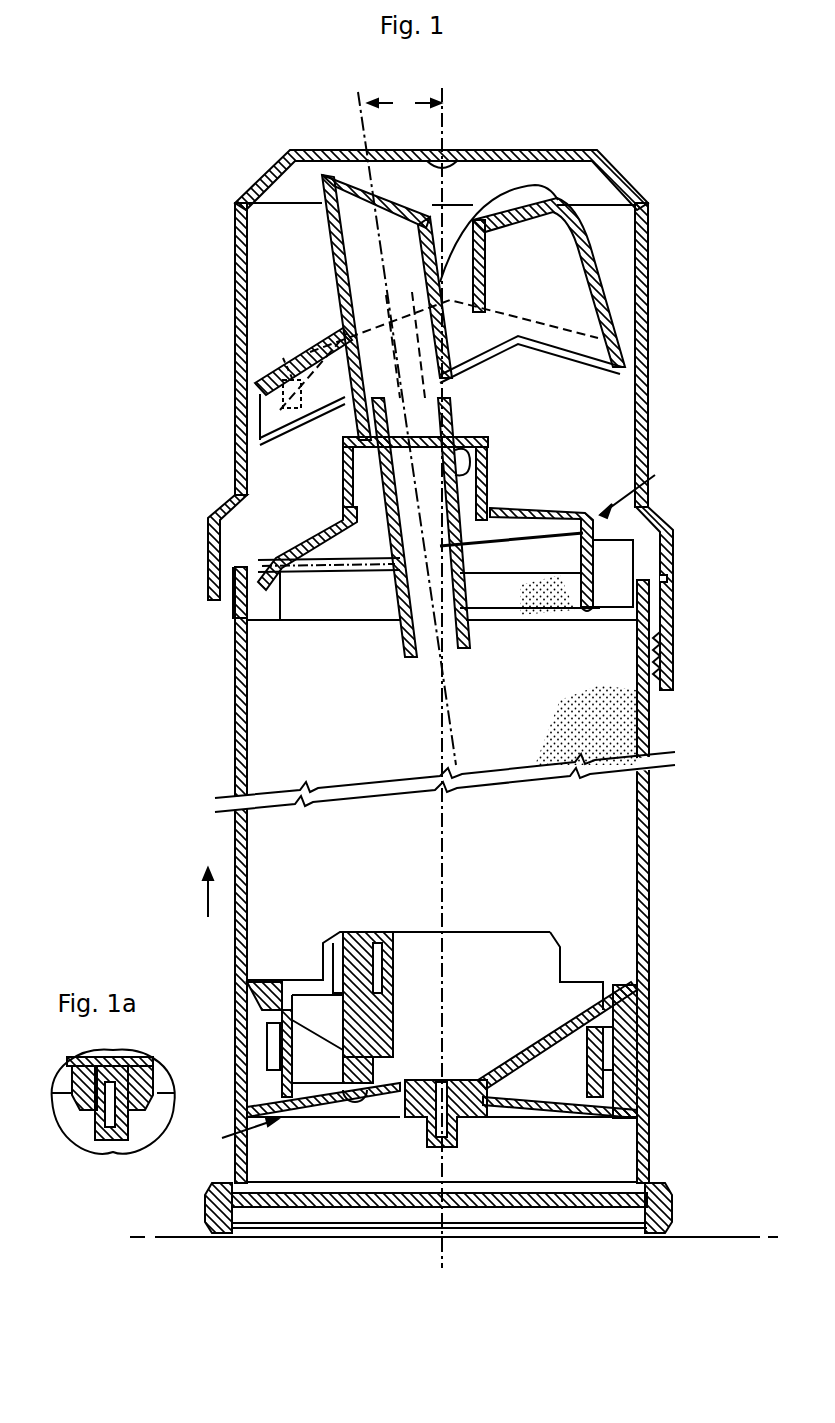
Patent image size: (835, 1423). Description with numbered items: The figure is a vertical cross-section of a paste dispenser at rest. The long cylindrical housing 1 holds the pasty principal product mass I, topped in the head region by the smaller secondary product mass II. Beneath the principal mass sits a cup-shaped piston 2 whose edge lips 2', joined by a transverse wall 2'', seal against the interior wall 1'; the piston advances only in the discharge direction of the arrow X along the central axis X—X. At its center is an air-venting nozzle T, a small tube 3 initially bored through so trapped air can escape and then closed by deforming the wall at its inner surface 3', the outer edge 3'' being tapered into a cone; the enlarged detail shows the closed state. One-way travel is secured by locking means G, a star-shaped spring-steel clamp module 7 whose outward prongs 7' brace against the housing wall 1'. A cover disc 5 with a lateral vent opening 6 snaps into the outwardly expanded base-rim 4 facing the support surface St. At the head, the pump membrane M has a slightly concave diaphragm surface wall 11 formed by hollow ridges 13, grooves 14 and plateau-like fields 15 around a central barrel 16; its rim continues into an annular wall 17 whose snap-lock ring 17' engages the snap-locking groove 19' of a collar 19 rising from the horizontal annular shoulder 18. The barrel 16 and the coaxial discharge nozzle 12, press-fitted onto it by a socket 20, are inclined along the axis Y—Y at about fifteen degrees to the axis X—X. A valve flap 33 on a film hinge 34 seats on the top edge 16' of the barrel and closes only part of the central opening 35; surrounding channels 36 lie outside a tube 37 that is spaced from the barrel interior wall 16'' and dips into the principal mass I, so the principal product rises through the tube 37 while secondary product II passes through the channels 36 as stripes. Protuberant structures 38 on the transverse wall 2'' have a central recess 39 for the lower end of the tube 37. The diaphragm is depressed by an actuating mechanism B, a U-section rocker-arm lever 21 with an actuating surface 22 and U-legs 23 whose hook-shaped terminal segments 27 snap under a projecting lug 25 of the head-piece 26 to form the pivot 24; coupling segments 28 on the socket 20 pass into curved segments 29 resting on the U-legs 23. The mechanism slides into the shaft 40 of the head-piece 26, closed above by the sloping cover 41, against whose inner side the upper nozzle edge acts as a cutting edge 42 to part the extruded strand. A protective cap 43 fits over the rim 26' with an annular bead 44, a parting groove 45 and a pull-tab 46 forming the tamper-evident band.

In FIG. 1, the housing 1 is at (464, 839).
In FIG. 1, the interior wall of the housing 1' is at (680, 881).
In FIG. 1, the piston 2 is at (594, 1068).
In FIG. 1, the edge lips of the piston 2' is at (593, 1038).
In FIG. 1, the transverse wall of the piston 2'' is at (555, 1051).
In FIG. 1, the tube of the air-venting nozzle 3 is at (451, 1113).
In FIG. 1a, the tube of the air-venting nozzle 3 is at (115, 1115).
In FIG. 1, the inner surface of the nozzle wall 3' is at (412, 1123).
In FIG. 1a, the inner surface of the nozzle wall 3' is at (68, 1124).
In FIG. 1, the outer edge of the nozzle wall 3'' is at (478, 1144).
In FIG. 1, the base-rim 4 is at (677, 1220).
In FIG. 1, the cover disc 5 is at (573, 1207).
In FIG. 1, the vent opening 6 is at (302, 1165).
In FIG. 1, the clamp module 7 is at (323, 1080).
In FIG. 1, the prong 7' is at (242, 1041).
In FIG. 1, the pump diaphragm surface wall 11 is at (529, 502).
In FIG. 1, the discharge nozzle 12 is at (462, 375).
In FIG. 1, the hollow ridges 13 is at (323, 530).
In FIG. 1, the grooves 14 is at (333, 560).
In FIG. 1, the fields 15 is at (550, 507).
In FIG. 1, the barrel 16 is at (327, 477).
In FIG. 1, the top edge of the barrel 16' is at (501, 483).
In FIG. 1, the interior wall of the barrel 16'' is at (328, 503).
In FIG. 1, the annular wall 17 is at (612, 573).
In FIG. 1, the snap-lock ring 17' is at (606, 592).
In FIG. 1, the annular shoulder 18 is at (600, 622).
In FIG. 1, the collar 19 is at (530, 574).
In FIG. 1, the snap-locking groove 19' is at (527, 595).
In FIG. 1, the socket 20 is at (470, 460).
In FIG. 1, the rocker-arm lever 21 is at (457, 273).
In FIG. 1, the actuating surface 22 is at (518, 200).
In FIG. 1, the U-legs 23 is at (335, 376).
In FIG. 1, the rocker-arm pivot 24 is at (283, 358).
In FIG. 1, the projecting lug 25 is at (300, 403).
In FIG. 1, the head-piece 26 is at (662, 355).
In FIG. 1, the rim of the head-piece 26' is at (679, 598).
In FIG. 1, the hook-shaped terminal segment 27 is at (262, 418).
In FIG. 1, the coupling segments 28 is at (396, 596).
In FIG. 1, the curved segments 29 is at (470, 396).
In FIG. 1, the valve flap 33 is at (390, 443).
In FIG. 1, the film hinge 34 is at (343, 447).
In FIG. 1, the central opening 35 is at (390, 568).
In FIG. 1, the channels 36 is at (465, 452).
In FIG. 1, the tube 37 is at (402, 640).
In FIG. 1, the protuberant structures 38 is at (523, 950).
In FIG. 1, the central recess 39 is at (422, 960).
In FIG. 1, the shaft 40 is at (445, 318).
In FIG. 1, the cover 41 is at (353, 178).
In FIG. 1, the spout tip 42 is at (320, 183).
In FIG. 1, the cap 43 is at (647, 270).
In FIG. 1, the annular bead 44 is at (668, 593).
In FIG. 1, the parting groove 45 is at (668, 578).
In FIG. 1, the pull-tab 46 is at (672, 638).
In FIG. 1, the actuating mechanism B is at (548, 196).
In FIG. 1, the pump membrane M is at (636, 485).
In FIG. 1, the principal product mass I is at (648, 719).
In FIG. 1, the secondary product mass II is at (562, 630).
In FIG. 1, the air-venting nozzle T is at (425, 1129).
In FIG. 1a, the air-venting nozzle T is at (95, 1120).
In FIG. 1, the locking means G is at (239, 1136).
In FIG. 1, the support surface St is at (740, 1237).
In FIG. 1, the lengthwise central axis X is at (325, 679).
In FIG. 1, the barrel axis Y is at (409, 413).